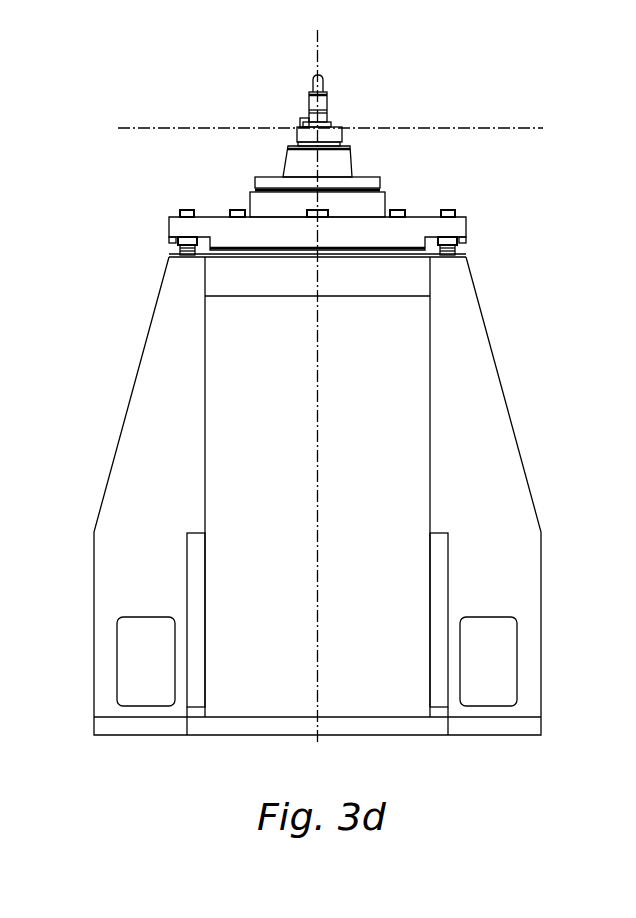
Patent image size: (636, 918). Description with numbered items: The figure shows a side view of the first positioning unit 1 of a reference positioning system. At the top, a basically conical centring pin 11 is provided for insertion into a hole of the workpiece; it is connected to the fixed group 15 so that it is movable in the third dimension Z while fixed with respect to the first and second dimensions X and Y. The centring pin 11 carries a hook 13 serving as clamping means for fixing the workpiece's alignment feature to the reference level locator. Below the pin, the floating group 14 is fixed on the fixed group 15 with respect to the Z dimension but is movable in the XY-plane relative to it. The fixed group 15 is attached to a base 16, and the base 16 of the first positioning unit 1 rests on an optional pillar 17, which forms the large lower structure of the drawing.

The first positioning unit 1 is at (548, 249).
The centring pin 11 is at (380, 94).
The hook 13 is at (253, 91).
The floating group 14 is at (385, 160).
The fixed group 15 is at (261, 181).
The base 16 is at (280, 217).
The pillar 17 is at (548, 742).